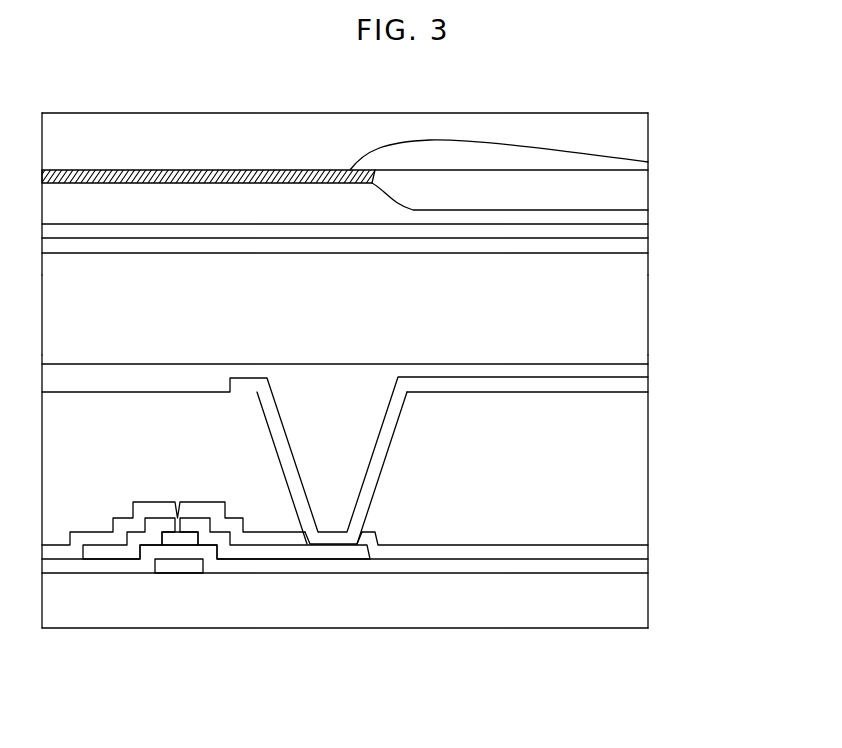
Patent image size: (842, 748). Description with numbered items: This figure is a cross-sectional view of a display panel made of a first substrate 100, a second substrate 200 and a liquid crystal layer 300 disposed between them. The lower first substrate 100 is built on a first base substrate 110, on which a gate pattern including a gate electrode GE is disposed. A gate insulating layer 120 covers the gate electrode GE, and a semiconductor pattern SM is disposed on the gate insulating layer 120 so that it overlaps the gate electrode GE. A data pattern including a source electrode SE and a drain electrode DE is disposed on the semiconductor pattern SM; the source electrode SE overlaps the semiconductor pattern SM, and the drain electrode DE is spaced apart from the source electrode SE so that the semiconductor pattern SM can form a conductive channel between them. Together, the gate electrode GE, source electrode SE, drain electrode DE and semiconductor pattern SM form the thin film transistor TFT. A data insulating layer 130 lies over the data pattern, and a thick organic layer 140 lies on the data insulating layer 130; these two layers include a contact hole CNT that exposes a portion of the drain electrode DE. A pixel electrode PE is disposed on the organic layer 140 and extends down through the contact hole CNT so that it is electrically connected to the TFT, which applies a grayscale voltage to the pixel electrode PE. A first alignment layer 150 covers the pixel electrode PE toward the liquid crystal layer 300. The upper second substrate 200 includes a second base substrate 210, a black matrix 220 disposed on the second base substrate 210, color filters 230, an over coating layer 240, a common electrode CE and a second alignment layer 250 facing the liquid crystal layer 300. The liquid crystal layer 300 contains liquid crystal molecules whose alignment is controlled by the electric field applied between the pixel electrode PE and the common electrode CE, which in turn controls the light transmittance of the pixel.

The first substrate 100 is at (723, 355).
The first base substrate 110 is at (640, 603).
The gate insulating layer 120 is at (640, 566).
The data insulating layer 130 is at (640, 550).
The organic layer 140 is at (640, 482).
The first alignment layer 150 is at (640, 368).
The second substrate 200 is at (723, 113).
The second base substrate 210 is at (640, 130).
The black matrix 220 is at (648, 162).
The color filters 230 is at (640, 190).
The over coating layer 240 is at (640, 218).
The second alignment layer 250 is at (640, 248).
The liquid crystal layer 300 is at (640, 305).
The common electrode CE is at (640, 233).
The pixel electrode PE is at (640, 386).
The contact hole CNT is at (328, 496).
The thin film transistor TFT is at (226, 619).
The source electrode SE is at (115, 552).
The gate electrode GE is at (178, 567).
The semiconductor pattern SM is at (182, 540).
The drain electrode DE is at (275, 603).